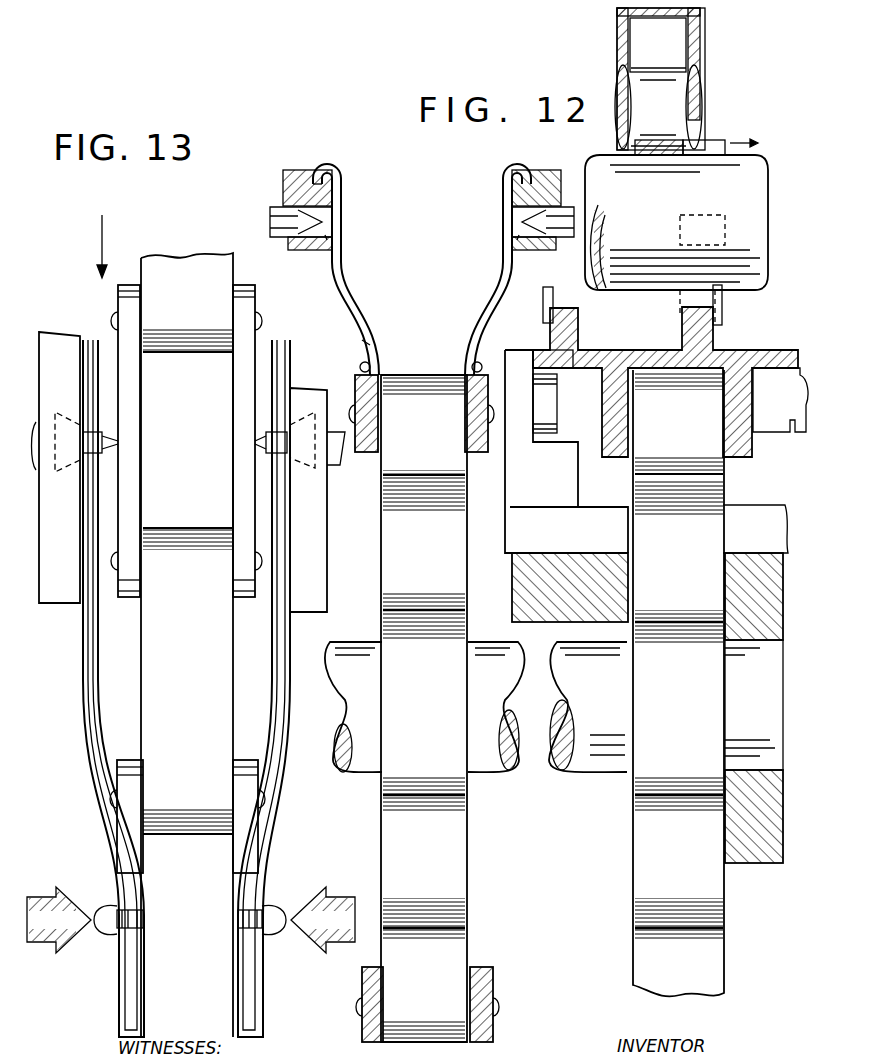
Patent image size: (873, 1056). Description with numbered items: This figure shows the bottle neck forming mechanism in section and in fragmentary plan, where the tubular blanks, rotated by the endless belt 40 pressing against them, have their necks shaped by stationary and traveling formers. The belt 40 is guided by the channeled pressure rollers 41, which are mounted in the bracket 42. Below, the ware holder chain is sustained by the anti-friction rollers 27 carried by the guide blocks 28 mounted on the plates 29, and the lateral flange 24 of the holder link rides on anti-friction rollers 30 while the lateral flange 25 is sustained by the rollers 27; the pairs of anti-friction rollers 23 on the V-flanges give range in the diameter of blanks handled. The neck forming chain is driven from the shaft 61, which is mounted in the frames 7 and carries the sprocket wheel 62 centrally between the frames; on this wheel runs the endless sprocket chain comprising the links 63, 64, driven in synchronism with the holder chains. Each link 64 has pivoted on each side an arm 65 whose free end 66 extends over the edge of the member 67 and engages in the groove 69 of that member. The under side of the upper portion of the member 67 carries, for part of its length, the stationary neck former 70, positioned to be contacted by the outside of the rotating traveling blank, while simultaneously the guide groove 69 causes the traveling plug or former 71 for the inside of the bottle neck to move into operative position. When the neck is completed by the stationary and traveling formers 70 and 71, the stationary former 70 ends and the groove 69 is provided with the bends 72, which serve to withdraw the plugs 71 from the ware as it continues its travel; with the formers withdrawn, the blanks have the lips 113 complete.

In FIG. 12, the mechanism frame 7 is at (767, 865).
In FIG. 12, the anti-friction roller 23 is at (718, 318).
In FIG. 12, the lateral flange 24 is at (740, 346).
In FIG. 12, the lateral flange 25 is at (532, 350).
In FIG. 12, the anti-friction roller 27 is at (533, 437).
In FIG. 12, the guide block 28 is at (510, 487).
In FIG. 12, the plate 29 is at (510, 555).
In FIG. 12, the anti-friction roller 30 is at (795, 435).
In FIG. 12, the endless belt 40 is at (712, 140).
In FIG. 12, the pressure roller 41 is at (617, 97).
In FIG. 12, the bracket 42 is at (617, 30).
In FIG. 12, the shaft 61 is at (500, 775).
In FIG. 12, the sprocket wheel 62 is at (632, 863).
In FIG. 13, the link 63 is at (143, 697).
In FIG. 13, the link 64 is at (237, 370).
In FIG. 12, the link 64 is at (386, 392).
In FIG. 13, the arm 65 is at (255, 447).
In FIG. 12, the arm 65 is at (480, 333).
In FIG. 12, the free end 66 is at (328, 163).
In FIG. 13, the member 67 is at (52, 330).
In FIG. 12, the member 67 is at (422, 249).
In FIG. 13, the groove 69 is at (82, 575).
In FIG. 12, the groove 69 is at (312, 170).
In FIG. 12, the stationary neck former 70 is at (325, 195).
In FIG. 13, the traveling plug or former 71 is at (105, 905).
In FIG. 12, the traveling plug or former 71 is at (328, 237).
In FIG. 13, the bend 72 is at (257, 875).
In FIG. 13, the lip 113 is at (310, 950).
In FIG. 12, the lip 113 is at (304, 250).